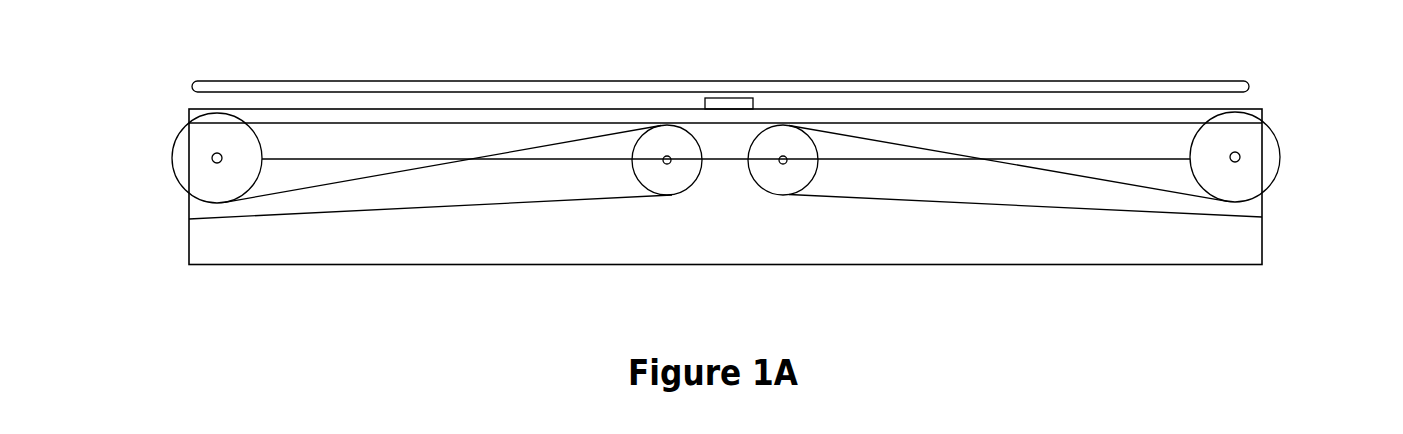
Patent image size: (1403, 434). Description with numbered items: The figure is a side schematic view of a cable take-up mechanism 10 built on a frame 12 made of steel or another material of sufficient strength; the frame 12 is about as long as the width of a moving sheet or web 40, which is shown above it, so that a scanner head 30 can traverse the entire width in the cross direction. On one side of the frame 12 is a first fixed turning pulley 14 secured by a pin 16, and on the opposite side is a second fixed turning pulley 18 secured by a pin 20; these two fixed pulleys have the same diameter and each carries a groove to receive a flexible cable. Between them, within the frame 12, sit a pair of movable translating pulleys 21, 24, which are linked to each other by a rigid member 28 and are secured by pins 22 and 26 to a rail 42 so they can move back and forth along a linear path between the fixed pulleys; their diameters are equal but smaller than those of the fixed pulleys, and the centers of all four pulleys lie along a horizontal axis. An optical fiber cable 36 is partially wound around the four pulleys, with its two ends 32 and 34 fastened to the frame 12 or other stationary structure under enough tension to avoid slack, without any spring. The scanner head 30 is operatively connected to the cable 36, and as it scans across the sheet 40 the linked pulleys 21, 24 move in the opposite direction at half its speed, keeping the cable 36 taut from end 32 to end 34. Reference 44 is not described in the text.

The cable take-up mechanism 10 is at (1018, 47).
The frame 12 is at (1122, 265).
The first fixed turning pulley 14 is at (178, 130).
The pin 16 is at (212, 159).
The second fixed turning pulley 18 is at (1277, 182).
The pin 20 is at (1240, 154).
The movable pulley 21 is at (767, 190).
The pin 22 is at (788, 163).
The movable pulley 24 is at (645, 190).
The pin 26 is at (663, 162).
The rigid member 28 is at (728, 157).
The scanner head 30 is at (728, 97).
The cable end 32 is at (1262, 218).
The cable end 34 is at (190, 220).
The optical fiber cable 36 is at (1138, 213).
The moving sheet or web 40 is at (415, 81).
The rail 42 is at (318, 158).
The top plate 44 is at (283, 109).